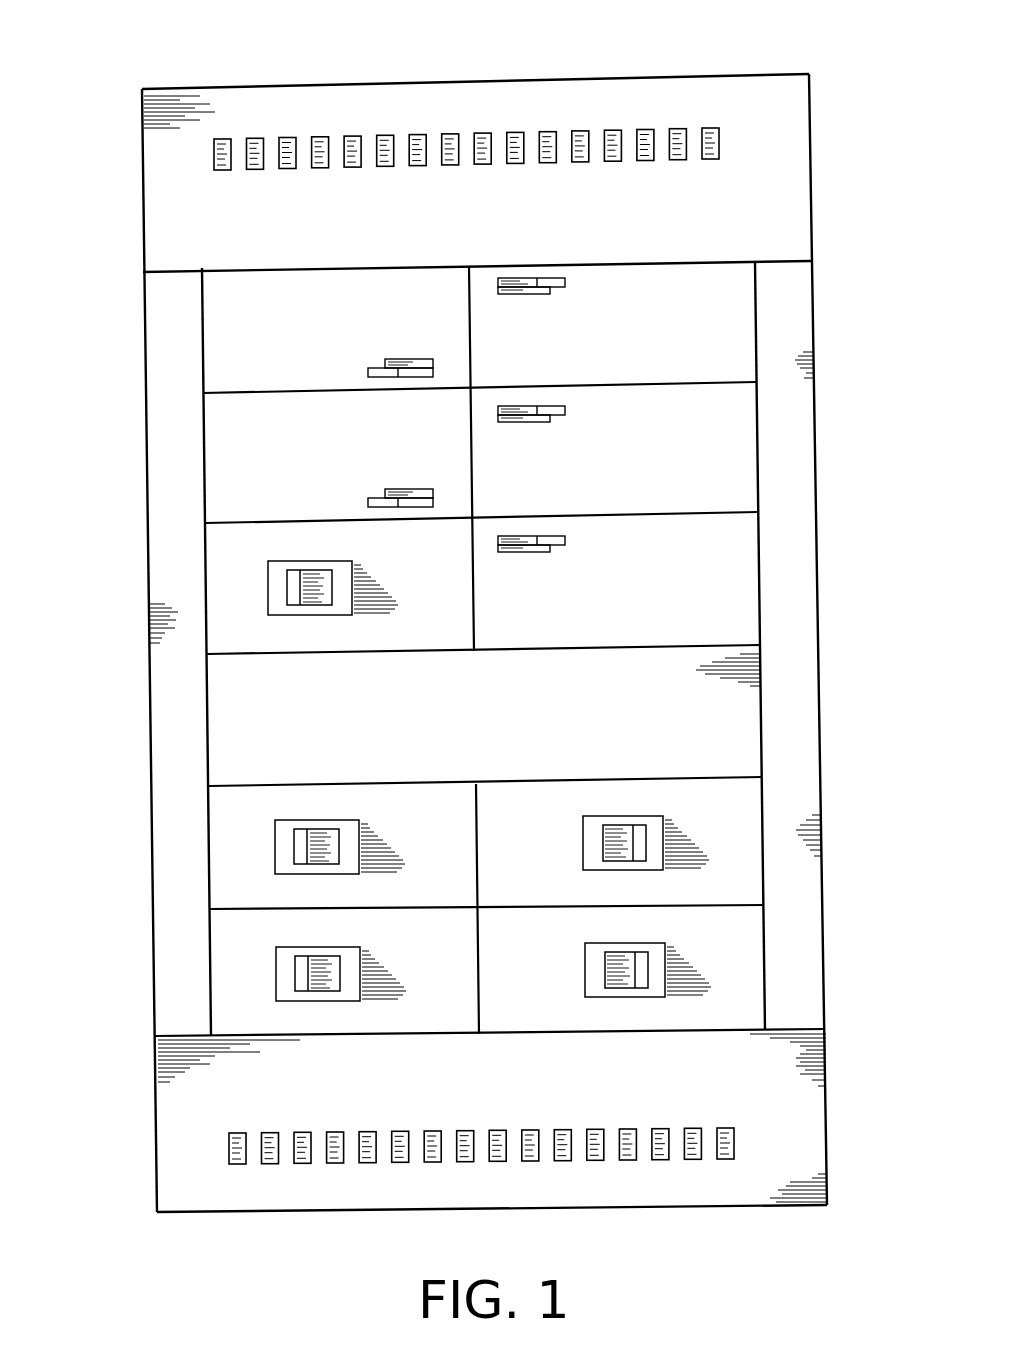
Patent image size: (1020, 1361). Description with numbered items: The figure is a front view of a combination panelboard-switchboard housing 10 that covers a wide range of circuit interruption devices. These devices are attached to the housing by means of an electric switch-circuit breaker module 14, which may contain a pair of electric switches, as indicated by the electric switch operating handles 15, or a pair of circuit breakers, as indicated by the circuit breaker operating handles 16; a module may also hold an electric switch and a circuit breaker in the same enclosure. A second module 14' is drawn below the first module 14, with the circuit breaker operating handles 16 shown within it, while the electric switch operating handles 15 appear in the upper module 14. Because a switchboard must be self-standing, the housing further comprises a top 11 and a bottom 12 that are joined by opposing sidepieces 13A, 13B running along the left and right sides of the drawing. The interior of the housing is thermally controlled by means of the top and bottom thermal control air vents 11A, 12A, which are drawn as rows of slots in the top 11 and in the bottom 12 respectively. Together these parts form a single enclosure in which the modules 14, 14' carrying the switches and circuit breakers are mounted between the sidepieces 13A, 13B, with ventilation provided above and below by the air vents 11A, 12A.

The panelboard-switchboard housing 10 is at (893, 1117).
The top 11 is at (752, 74).
The top thermal control air vent 11A is at (612, 161).
The bottom 12 is at (203, 1213).
The bottom thermal control air vent 12A is at (627, 1128).
The sidepiece 13A is at (147, 382).
The sidepiece 13B is at (815, 325).
The electric switch-circuit breaker module 14 is at (481, 460).
The electric switch-circuit breaker module 14' is at (490, 906).
The electric switch operating handle 15 is at (565, 286).
The circuit breaker operating handle 16 is at (603, 833).